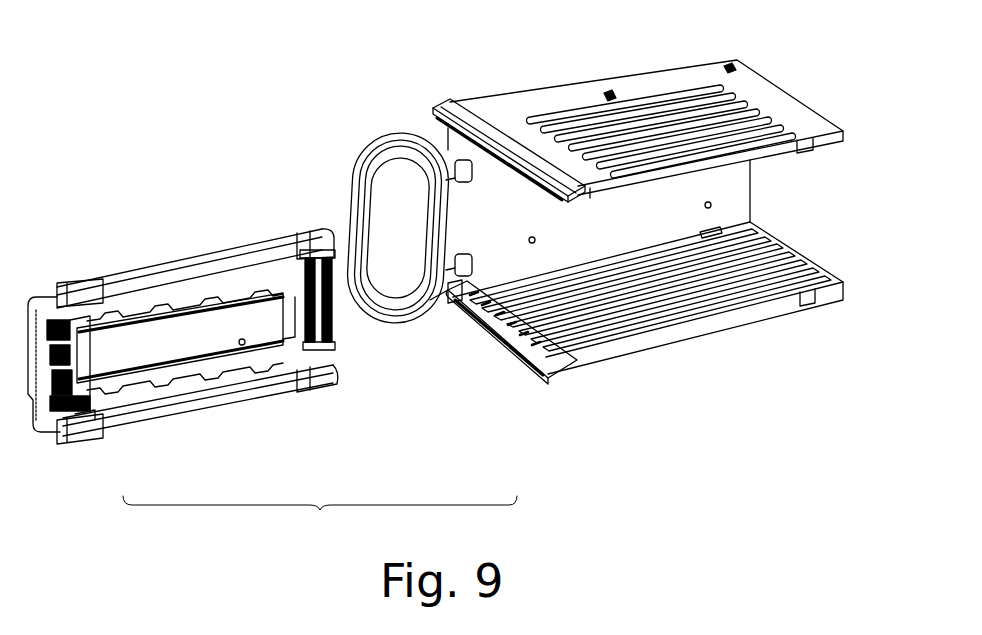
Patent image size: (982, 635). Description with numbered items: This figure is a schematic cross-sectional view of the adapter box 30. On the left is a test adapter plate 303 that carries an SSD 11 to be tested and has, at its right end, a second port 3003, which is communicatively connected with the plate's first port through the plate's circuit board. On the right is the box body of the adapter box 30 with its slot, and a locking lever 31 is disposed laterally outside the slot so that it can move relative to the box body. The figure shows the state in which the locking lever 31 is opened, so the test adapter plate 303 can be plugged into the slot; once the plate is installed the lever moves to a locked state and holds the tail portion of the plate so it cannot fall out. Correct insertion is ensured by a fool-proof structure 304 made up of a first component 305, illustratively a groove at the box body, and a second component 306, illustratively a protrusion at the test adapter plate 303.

The adapter box 30 is at (753, 96).
The locking lever 31 is at (450, 103).
The first component 305 is at (541, 366).
The test adapter plate 303 is at (103, 229).
The SSD 11 is at (147, 352).
The second port 3003 is at (337, 278).
The second component 306 is at (80, 447).
The fool-proof structure 304 is at (320, 515).